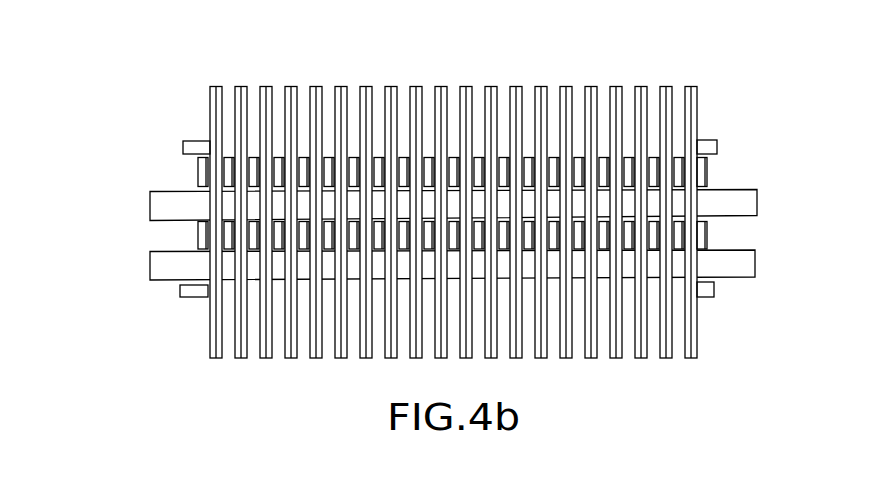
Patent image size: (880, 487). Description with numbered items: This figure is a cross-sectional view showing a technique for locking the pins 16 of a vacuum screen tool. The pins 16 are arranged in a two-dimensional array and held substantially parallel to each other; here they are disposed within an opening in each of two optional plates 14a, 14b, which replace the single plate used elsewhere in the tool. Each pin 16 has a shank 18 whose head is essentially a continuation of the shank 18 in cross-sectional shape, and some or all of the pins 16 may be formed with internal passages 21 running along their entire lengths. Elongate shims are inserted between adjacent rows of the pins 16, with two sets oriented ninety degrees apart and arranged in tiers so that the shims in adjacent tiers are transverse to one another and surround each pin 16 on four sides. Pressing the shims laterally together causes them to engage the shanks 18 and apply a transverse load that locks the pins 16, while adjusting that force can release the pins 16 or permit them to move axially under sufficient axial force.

The pins 16 is at (322, 90).
The internal passages 21 is at (694, 108).
The plate 14a is at (183, 147).
The plate 14b is at (183, 295).
The shank 18 is at (695, 332).